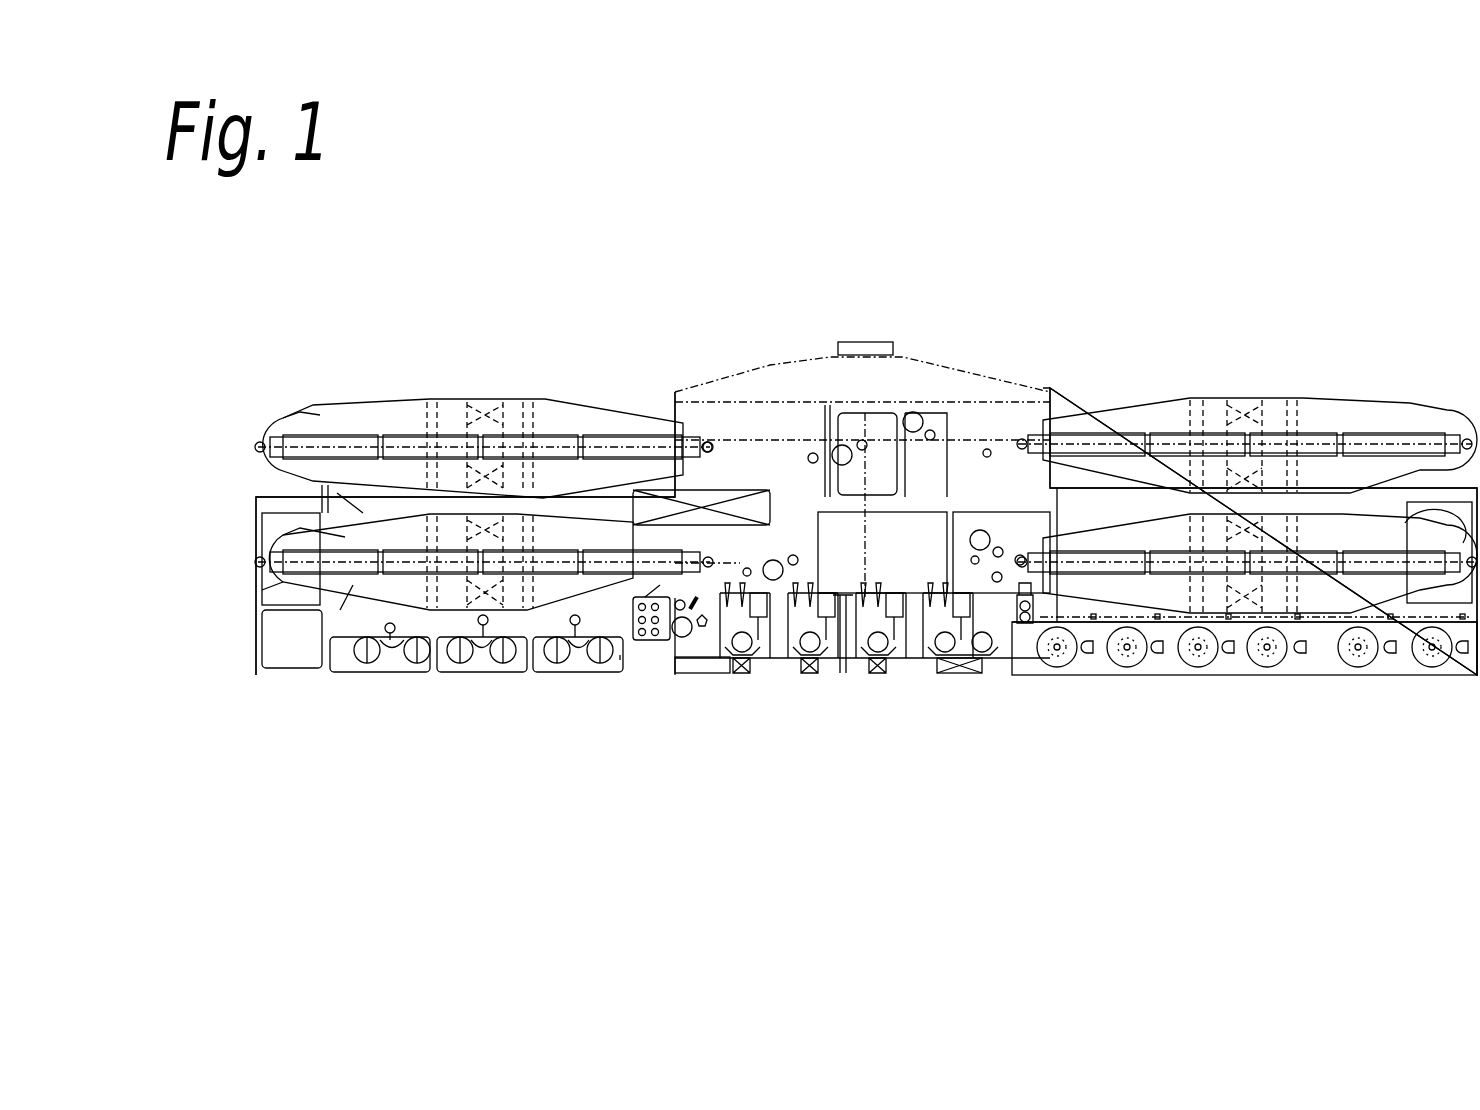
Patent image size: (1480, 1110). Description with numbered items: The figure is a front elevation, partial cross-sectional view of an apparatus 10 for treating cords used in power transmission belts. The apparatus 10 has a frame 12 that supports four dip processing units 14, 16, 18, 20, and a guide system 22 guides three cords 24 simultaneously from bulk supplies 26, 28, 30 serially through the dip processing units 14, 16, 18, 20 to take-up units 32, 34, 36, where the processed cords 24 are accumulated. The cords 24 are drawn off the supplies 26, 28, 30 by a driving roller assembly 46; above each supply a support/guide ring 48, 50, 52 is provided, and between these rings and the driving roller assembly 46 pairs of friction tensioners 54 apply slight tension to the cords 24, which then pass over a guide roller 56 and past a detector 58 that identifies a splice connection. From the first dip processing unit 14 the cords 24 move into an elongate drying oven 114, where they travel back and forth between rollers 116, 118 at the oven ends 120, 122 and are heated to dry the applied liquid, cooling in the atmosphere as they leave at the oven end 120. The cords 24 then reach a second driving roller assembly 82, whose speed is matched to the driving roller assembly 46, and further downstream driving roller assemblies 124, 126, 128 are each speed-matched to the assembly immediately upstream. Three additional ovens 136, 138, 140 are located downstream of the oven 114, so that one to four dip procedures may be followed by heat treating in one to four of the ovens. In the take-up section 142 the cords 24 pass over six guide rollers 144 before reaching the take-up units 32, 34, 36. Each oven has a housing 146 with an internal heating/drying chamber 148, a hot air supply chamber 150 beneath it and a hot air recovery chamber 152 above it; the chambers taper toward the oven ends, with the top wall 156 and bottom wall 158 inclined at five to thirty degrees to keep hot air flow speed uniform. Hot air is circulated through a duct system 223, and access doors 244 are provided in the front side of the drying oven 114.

The apparatus 10 is at (1165, 288).
The frame 12 is at (250, 667).
The dip processing unit 14 is at (747, 680).
The dip processing unit 16 is at (807, 680).
The dip processing unit 18 is at (875, 680).
The dip processing unit 20 is at (958, 680).
The guide system 22 is at (752, 575).
The cords 24 is at (792, 540).
The bulk supply 26 is at (380, 668).
The bulk supply 28 is at (470, 668).
The bulk supply 30 is at (575, 680).
The take-up unit 32 is at (1163, 668).
The take-up unit 34 is at (1268, 685).
The take-up unit 36 is at (1417, 685).
The driving roller assembly 46 is at (700, 634).
The support/guide ring 48 is at (353, 585).
The support/guide ring 50 is at (450, 600).
The support/guide ring 52 is at (532, 600).
The friction tensioners 54 is at (658, 597).
The guide roller 56 is at (695, 603).
The detector 58 is at (686, 600).
The second driving roller assembly 82 is at (800, 552).
The drying oven 114 is at (568, 550).
The roller 116 is at (732, 660).
The roller 118 is at (255, 562).
The oven end 120 is at (702, 615).
The oven end 122 is at (345, 535).
The driving roller assembly 124 is at (848, 427).
The driving roller assembly 126 is at (930, 412).
The driving roller assembly 128 is at (910, 675).
The oven 136 is at (565, 435).
The oven 138 is at (1175, 429).
The oven 140 is at (1176, 550).
The take-up section 142 is at (1275, 790).
The guide rollers 144 is at (1462, 615).
The housing 146 is at (567, 528).
The heating/drying chamber 148 is at (620, 660).
The hot air supply chamber 150 is at (335, 612).
The hot air recovery chamber 152 is at (300, 530).
The top wall 156 is at (318, 520).
The bottom wall 158 is at (310, 592).
The duct system 223 is at (260, 590).
The access doors 244 is at (645, 597).